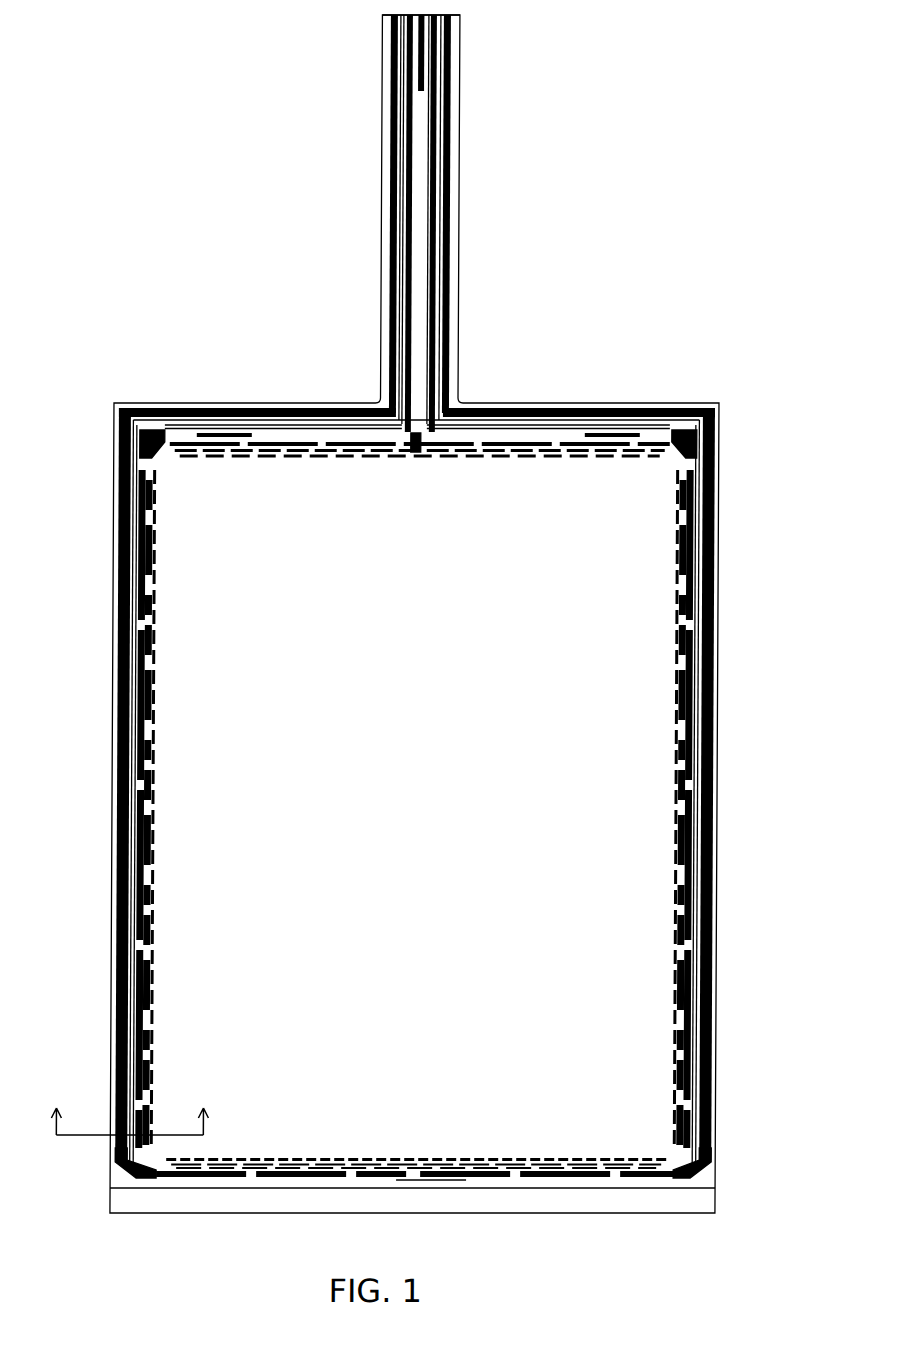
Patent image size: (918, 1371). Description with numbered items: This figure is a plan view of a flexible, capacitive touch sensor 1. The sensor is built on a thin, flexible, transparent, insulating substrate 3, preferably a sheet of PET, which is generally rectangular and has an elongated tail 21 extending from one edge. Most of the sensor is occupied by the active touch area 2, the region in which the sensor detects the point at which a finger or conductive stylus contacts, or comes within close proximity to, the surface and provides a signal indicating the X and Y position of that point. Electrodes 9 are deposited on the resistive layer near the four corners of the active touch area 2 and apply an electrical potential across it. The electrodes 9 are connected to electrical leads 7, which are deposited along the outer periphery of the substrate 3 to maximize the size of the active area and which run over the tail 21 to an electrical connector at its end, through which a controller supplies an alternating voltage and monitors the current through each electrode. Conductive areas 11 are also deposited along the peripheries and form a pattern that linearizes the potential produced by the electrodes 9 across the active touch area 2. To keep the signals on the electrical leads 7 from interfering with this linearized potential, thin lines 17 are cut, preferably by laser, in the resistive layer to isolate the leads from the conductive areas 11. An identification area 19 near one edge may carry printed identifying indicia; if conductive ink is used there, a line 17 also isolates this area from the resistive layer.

The touch sensor 1 is at (171, 207).
The active touch area 2 is at (414, 811).
The substrate 3 is at (459, 350).
The electrical leads 7 is at (391, 98).
The electrodes 9 is at (699, 438).
The conductive areas 11 is at (272, 462).
The lines 17 is at (410, 260).
The identification area 19 is at (250, 1207).
The tail 21 is at (463, 52).